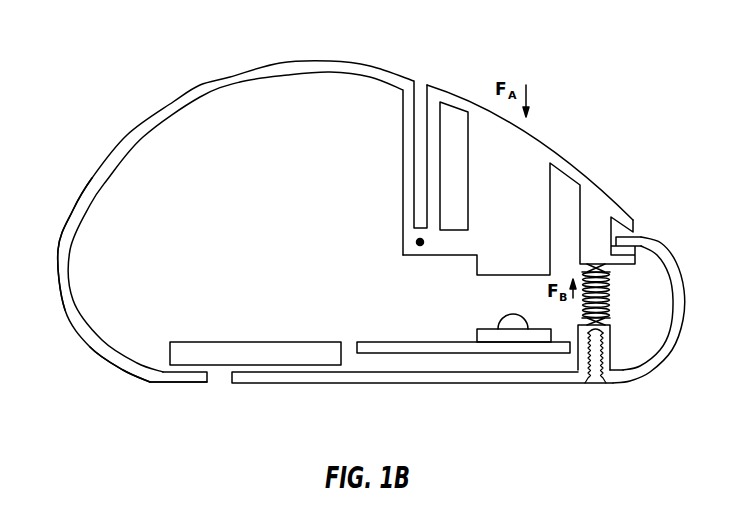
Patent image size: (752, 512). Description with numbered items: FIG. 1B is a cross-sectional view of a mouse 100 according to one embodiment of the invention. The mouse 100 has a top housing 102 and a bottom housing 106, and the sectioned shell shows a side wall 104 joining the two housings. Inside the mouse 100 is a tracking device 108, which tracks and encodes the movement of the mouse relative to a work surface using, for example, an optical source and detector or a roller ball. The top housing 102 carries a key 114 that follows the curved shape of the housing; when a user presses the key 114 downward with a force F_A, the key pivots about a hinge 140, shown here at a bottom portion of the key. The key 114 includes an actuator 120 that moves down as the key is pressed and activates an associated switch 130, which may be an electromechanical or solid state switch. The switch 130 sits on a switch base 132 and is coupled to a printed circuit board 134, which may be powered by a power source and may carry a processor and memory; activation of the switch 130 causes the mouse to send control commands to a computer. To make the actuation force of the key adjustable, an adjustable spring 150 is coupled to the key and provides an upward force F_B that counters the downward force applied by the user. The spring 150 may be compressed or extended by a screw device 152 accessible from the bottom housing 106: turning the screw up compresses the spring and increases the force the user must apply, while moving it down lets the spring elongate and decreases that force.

The mouse 100 is at (91, 99).
The top housing 102 is at (232, 77).
The side wall of housing 104 is at (132, 205).
The bottom housing 106 is at (163, 385).
The tracking device 108 is at (255, 342).
The key 114 is at (538, 138).
The actuator 120 is at (480, 275).
The switch 130 is at (505, 314).
The switch base 132 is at (513, 342).
The printed circuit board 134 is at (430, 353).
The hinge 140 is at (416, 240).
The adjustable spring 150 is at (610, 296).
The screw device 152 is at (595, 383).